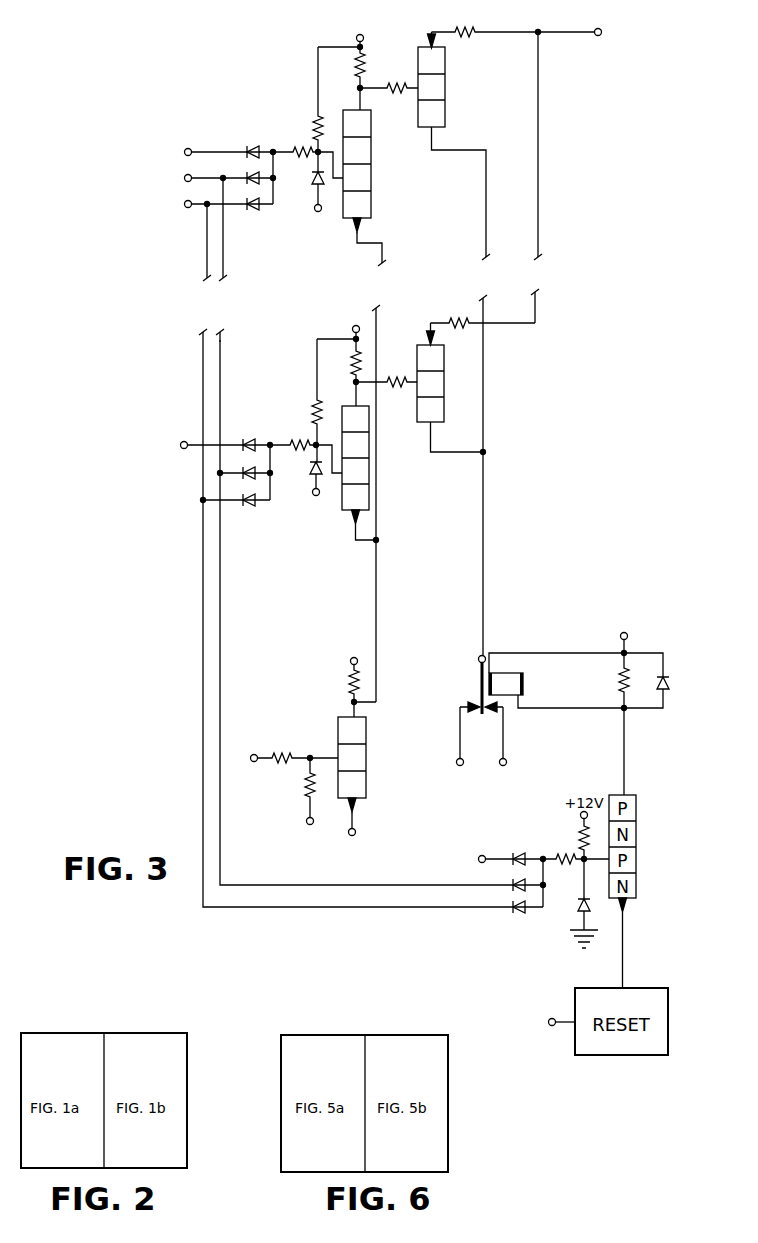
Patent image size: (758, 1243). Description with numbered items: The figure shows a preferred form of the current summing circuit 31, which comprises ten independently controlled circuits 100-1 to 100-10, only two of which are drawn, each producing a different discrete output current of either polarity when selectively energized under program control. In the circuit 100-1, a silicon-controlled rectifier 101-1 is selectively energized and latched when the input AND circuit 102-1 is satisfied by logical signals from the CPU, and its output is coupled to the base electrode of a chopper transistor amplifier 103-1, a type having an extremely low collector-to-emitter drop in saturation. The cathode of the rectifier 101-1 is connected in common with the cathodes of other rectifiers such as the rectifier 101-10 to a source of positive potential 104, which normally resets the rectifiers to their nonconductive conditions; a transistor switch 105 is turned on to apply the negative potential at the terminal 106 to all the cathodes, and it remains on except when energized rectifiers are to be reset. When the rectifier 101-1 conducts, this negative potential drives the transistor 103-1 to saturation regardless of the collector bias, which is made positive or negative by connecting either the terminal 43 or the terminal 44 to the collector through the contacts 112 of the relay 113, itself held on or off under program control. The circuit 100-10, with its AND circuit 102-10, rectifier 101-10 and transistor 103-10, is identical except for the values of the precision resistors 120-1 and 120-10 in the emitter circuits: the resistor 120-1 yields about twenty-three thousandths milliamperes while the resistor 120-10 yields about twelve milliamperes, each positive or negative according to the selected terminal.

The independently controlled circuit 100-1 is at (560, 114).
The silicon-controlled rectifier 101-1 is at (372, 180).
The input AND circuit 102-1 is at (216, 140).
The chopper transistor amplifier 103-1 is at (445, 80).
The precision resistor 120-1 is at (470, 28).
The independently controlled circuit 100-10 is at (552, 451).
The silicon-controlled rectifier 101-10 is at (370, 493).
The input AND circuit 102-10 is at (278, 430).
The chopper transistor amplifier 103-10 is at (444, 391).
The precision resistor 120-10 is at (456, 316).
The current summing circuit 31 is at (151, 612).
The source of positive potential 104 is at (350, 662).
The transistor switch 105 is at (366, 794).
The terminal 106 is at (355, 829).
The contacts 112 is at (466, 690).
The relay 113 is at (514, 679).
The terminal 43 is at (456, 760).
The terminal 44 is at (505, 760).